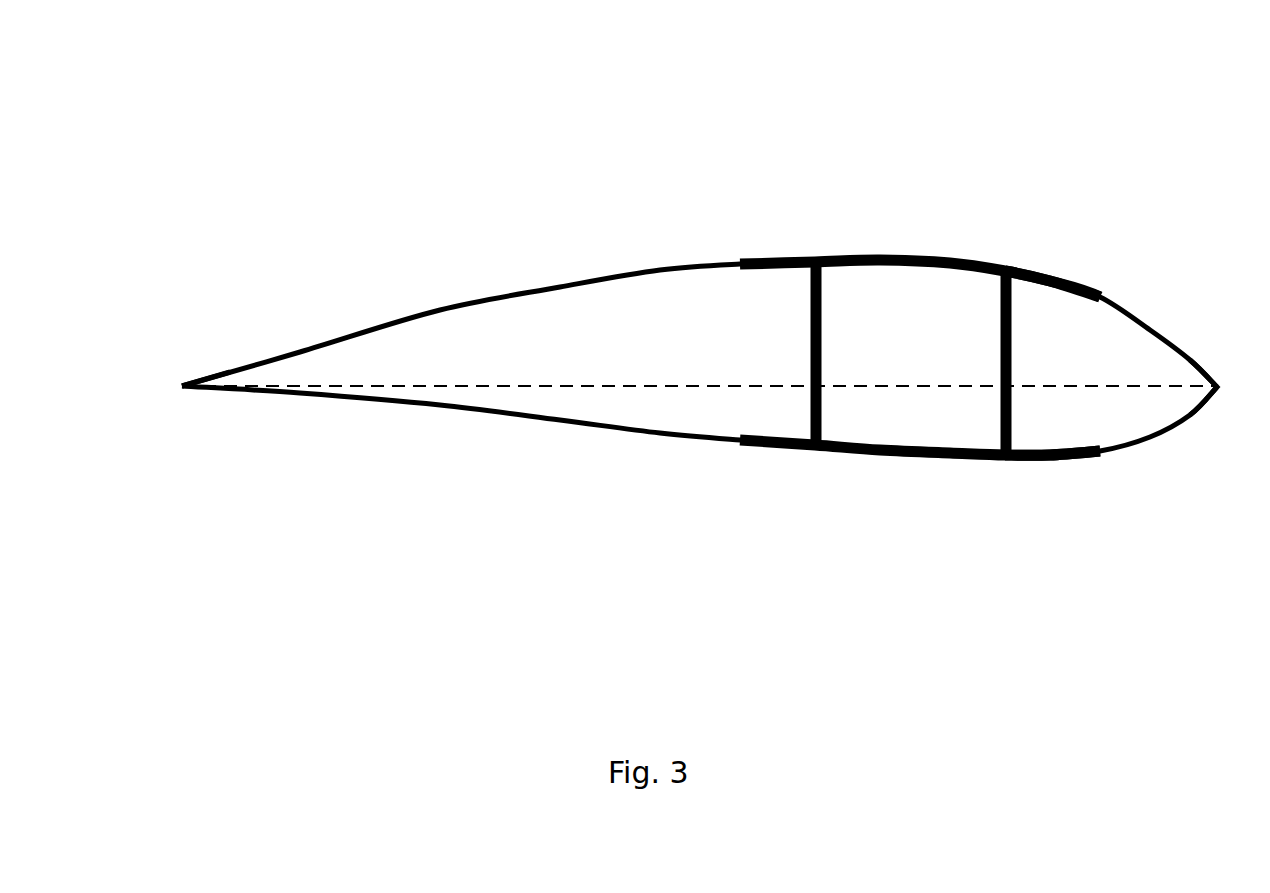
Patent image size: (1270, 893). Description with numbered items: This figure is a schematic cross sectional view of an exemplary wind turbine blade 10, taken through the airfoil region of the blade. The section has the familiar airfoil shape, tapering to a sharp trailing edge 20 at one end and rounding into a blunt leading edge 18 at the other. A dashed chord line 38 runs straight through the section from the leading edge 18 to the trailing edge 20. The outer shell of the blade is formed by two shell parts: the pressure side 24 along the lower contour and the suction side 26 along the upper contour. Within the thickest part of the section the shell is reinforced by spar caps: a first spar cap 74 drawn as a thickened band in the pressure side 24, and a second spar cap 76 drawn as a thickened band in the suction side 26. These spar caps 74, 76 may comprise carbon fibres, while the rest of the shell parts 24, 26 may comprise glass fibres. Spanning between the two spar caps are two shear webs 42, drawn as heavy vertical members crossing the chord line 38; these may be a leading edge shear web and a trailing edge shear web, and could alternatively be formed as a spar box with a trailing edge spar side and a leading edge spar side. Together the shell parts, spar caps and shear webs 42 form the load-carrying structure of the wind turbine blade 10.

The wind turbine blade 10 is at (578, 100).
The leading edge 18 is at (1220, 385).
The trailing edge 20 is at (182, 385).
The pressure side 24 is at (1022, 462).
The suction side 26 is at (1045, 268).
The chord line 38 is at (700, 385).
The shear webs 42 is at (810, 410).
The first spar cap 74 is at (920, 460).
The second spar cap 76 is at (928, 257).